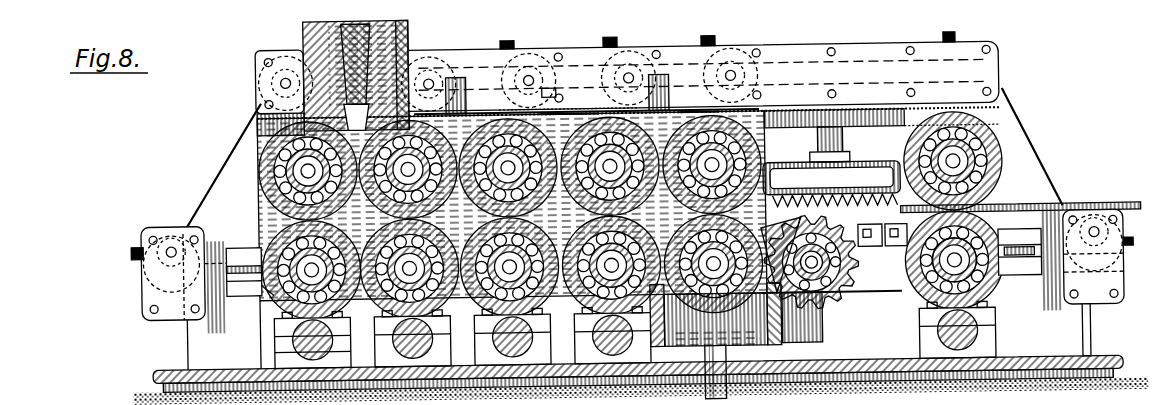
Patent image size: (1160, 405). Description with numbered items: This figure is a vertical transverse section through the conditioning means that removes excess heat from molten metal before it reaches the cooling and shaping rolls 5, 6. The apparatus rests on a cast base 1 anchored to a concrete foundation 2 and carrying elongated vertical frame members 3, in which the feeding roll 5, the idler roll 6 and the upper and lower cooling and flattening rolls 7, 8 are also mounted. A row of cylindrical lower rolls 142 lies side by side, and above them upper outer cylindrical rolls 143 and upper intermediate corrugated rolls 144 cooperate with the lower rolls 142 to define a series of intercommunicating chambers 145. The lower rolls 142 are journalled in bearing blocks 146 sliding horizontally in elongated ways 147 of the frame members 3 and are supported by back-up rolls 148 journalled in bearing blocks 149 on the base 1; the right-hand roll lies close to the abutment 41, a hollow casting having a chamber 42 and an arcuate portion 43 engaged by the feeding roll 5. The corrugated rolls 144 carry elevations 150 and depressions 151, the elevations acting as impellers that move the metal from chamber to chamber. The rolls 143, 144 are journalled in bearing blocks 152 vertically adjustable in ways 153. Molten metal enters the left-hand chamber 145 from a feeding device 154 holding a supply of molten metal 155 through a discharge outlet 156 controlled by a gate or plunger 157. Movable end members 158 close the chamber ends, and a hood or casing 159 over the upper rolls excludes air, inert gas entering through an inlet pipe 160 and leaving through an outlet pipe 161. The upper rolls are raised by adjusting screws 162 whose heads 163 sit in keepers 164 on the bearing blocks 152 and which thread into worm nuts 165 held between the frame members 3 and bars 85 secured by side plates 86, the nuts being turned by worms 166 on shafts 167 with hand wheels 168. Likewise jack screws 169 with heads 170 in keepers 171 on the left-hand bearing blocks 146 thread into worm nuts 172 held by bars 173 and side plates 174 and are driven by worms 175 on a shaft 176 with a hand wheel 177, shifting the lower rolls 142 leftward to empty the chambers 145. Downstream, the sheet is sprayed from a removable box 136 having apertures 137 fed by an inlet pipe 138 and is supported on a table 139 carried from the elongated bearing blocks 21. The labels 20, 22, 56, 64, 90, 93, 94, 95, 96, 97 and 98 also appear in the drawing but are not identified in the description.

The base 1 is at (157, 374).
The concrete foundation 2 is at (140, 395).
The frame members 3 is at (214, 178).
The feeding roll 5 is at (780, 322).
The idler roll 6 is at (822, 312).
The upper cooling and flattening roll 7 is at (1002, 170).
The lower cooling and flattening roll 8 is at (993, 294).
The gear 20 is at (850, 277).
The elongated bearing blocks 21 is at (872, 290).
The bearing block 22 is at (1025, 286).
The abutment 41 is at (790, 336).
The chamber 42 is at (770, 350).
The arcuate portion 43 is at (700, 345).
The upper right bearing 56 is at (1002, 178).
The bearing hub 64 is at (984, 300).
The bars 85 is at (790, 66).
The side plates 86 is at (860, 57).
The stop 90 is at (1132, 255).
The end plate 93 is at (1098, 318).
The slot 94 is at (1122, 284).
The bolt 95 is at (1116, 306).
The rod 96 is at (1080, 214).
The screw 97 is at (1095, 240).
The bolt 98 is at (1123, 232).
The removable box 136 is at (848, 168).
The apertures 137 is at (840, 199).
The inlet pipe 138 is at (838, 138).
The table 139 is at (880, 256).
The lower rolls 142 is at (272, 322).
The upper outer cylindrical rolls 143 is at (260, 172).
The upper intermediate corrugated rolls 144 is at (565, 118).
The intercommunicating chambers 145 is at (555, 260).
The bearing blocks 146 is at (244, 288).
The elongated ways 147 is at (242, 246).
The back-up rolls 148 is at (629, 340).
The bearing blocks 149 is at (284, 352).
The elevations 150 is at (494, 115).
The depressions 151 is at (548, 100).
The bearing blocks 152 is at (255, 152).
The ways 153 is at (258, 111).
The feeding device 154 is at (307, 36).
The supply of molten metal 155 is at (410, 29).
The discharge outlet 156 is at (362, 114).
The gate 157 is at (372, 56).
The movable end members 158 is at (266, 210).
The hood 159 is at (693, 118).
The inlet pipe 160 is at (660, 82).
The outlet pipe 161 is at (463, 84).
The adjusting screws 162 is at (615, 44).
The heads 163 is at (270, 128).
The keepers 164 is at (268, 137).
The worm nuts 165 is at (600, 80).
The worms 166 is at (548, 60).
The shafts 167 is at (529, 78).
The hand wheels 168 is at (462, 52).
The jack screws 169 is at (140, 268).
The heads 170 is at (232, 263).
The keepers 171 is at (262, 300).
The worm nuts 172 is at (150, 283).
The bars 173 is at (155, 300).
The side plates 174 is at (165, 300).
The worms 175 is at (150, 251).
The shaft 176 is at (166, 250).
The hand wheel 177 is at (170, 224).